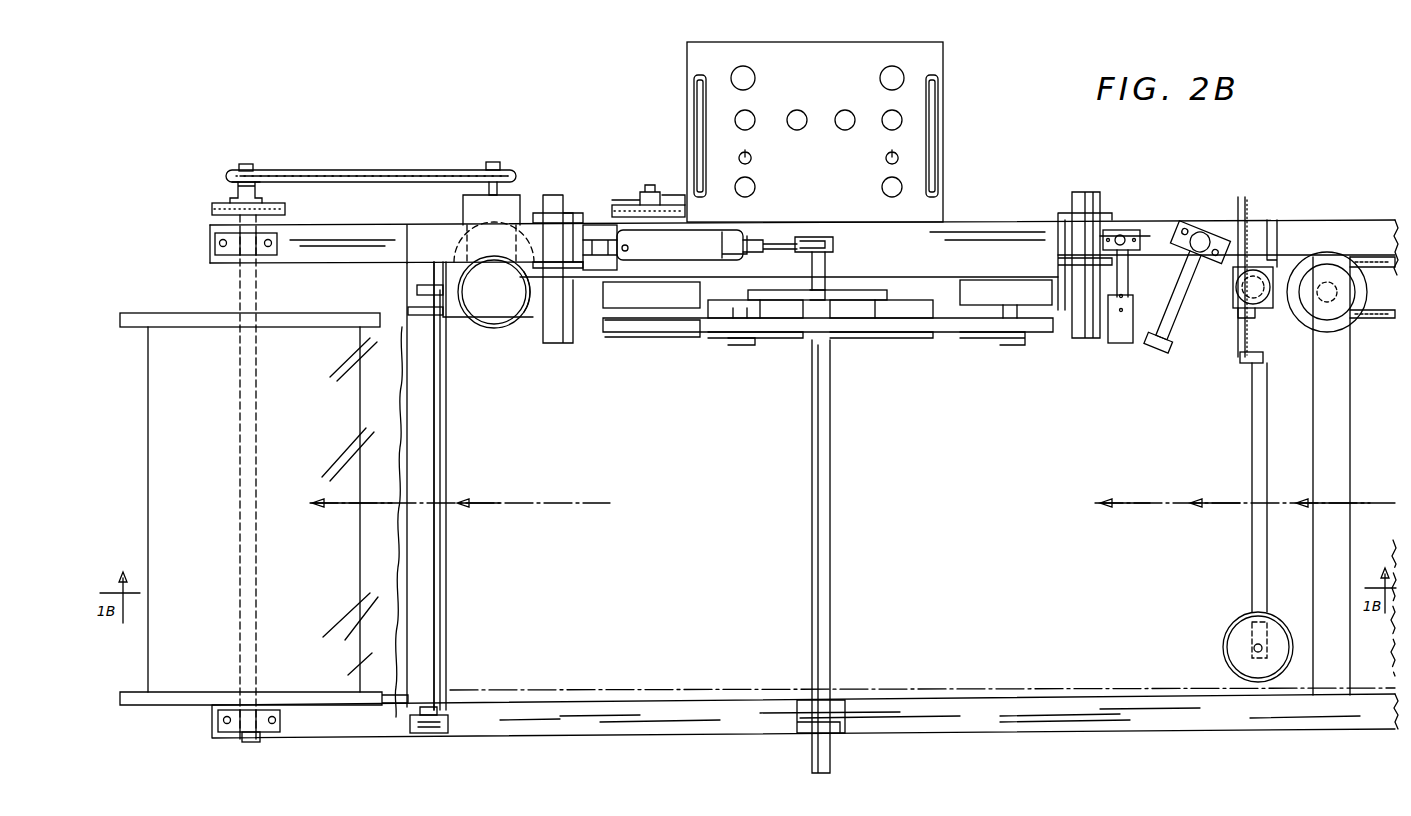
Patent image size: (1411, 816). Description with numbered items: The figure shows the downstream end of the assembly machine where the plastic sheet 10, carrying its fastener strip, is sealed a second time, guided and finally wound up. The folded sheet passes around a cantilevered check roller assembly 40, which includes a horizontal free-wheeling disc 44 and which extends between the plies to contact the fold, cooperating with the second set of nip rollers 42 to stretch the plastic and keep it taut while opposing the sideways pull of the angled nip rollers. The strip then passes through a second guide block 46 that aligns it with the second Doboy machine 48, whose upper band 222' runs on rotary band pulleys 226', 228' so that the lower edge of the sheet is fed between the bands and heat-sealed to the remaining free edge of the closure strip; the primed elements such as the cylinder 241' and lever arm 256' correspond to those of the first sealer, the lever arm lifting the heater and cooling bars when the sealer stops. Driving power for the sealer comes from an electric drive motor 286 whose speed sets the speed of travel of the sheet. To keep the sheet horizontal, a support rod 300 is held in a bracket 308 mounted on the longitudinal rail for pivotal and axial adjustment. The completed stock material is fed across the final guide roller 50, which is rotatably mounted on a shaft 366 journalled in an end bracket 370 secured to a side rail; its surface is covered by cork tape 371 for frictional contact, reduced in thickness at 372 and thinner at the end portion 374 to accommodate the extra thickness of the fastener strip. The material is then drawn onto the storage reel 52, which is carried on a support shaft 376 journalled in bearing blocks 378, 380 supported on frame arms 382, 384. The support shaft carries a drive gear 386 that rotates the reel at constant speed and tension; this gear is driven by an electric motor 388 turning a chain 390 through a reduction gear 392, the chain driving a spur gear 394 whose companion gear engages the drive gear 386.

The plastic sheet 10 is at (387, 382).
The check roller assembly 40 is at (1272, 262).
The second set of nip rollers 42 is at (1203, 226).
The horizontal free-wheeling disc 44 is at (1232, 633).
The second guide block 46 is at (1122, 328).
The second Doboy machine 48 is at (975, 210).
The final guide roller 50 is at (452, 433).
The storage reel 52 is at (178, 317).
The upper band 222' is at (828, 329).
The rotary band pulley 226' is at (674, 327).
The rotary band pulley 228' is at (1004, 325).
The air cylinder of sealer 48 241' is at (690, 247).
The lever arm 256' is at (843, 263).
The electric drive motor 286 is at (1358, 262).
The support rod 300 is at (812, 568).
The bracket 308 is at (838, 708).
The shaft 366 is at (436, 710).
The end bracket 370 is at (447, 735).
The cork tape 371 is at (428, 474).
The reduced-thickness section 372 is at (424, 342).
The end portion 374 is at (437, 325).
The support shaft 376 is at (244, 742).
The bearing block 378 is at (262, 733).
The bearing block 380 is at (214, 243).
The frame arm 382 is at (354, 720).
The frame arm 384 is at (355, 240).
The drive gear 386 is at (212, 209).
The electric motor 388 is at (478, 300).
The chain 390 is at (413, 170).
The reduction gear 392 is at (514, 203).
The spur gear 394 is at (240, 166).